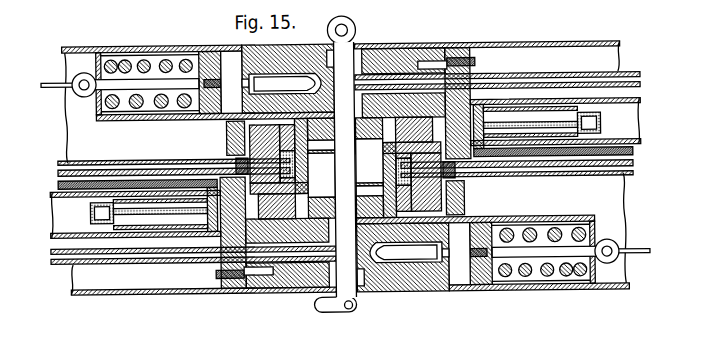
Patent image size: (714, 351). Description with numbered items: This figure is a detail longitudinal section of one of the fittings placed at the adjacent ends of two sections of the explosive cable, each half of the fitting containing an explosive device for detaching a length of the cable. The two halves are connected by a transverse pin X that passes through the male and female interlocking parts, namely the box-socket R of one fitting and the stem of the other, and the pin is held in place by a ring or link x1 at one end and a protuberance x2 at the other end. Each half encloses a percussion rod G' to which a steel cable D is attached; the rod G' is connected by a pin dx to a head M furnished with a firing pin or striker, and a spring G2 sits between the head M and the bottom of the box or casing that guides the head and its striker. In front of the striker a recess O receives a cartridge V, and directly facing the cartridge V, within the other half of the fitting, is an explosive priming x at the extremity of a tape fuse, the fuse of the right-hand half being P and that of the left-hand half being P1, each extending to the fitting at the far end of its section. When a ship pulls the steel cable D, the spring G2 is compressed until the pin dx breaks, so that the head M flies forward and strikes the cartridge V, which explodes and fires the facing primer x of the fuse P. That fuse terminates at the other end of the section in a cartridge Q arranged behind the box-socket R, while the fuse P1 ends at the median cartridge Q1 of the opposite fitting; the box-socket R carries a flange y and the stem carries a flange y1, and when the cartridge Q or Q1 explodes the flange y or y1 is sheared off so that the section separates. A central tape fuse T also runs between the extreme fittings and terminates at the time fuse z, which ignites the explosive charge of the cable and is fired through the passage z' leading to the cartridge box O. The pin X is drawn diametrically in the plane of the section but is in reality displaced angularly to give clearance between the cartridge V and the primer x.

The percussion rod G' is at (345, 171).
The spring G2 is at (572, 229).
The head M is at (206, 50).
The steel cable D is at (351, 167).
The cartridge V is at (345, 168).
The recess (cartridge box) O is at (328, 70).
The protuberance x2 is at (353, 22).
The explosive priming x is at (378, 46).
The ring or link x1 is at (328, 312).
The transverse pin X is at (345, 170).
The box-socket R is at (345, 167).
The tape fuse P is at (90, 158).
The tape fuse P1 is at (625, 175).
The central tape fuse T is at (657, 132).
The time fuse z is at (341, 169).
The passage z' is at (327, 174).
The flange y is at (216, 233).
The flange y1 is at (470, 63).
The cartridge Q is at (240, 156).
The median cartridge Q1 is at (463, 192).
The pin dx is at (515, 212).